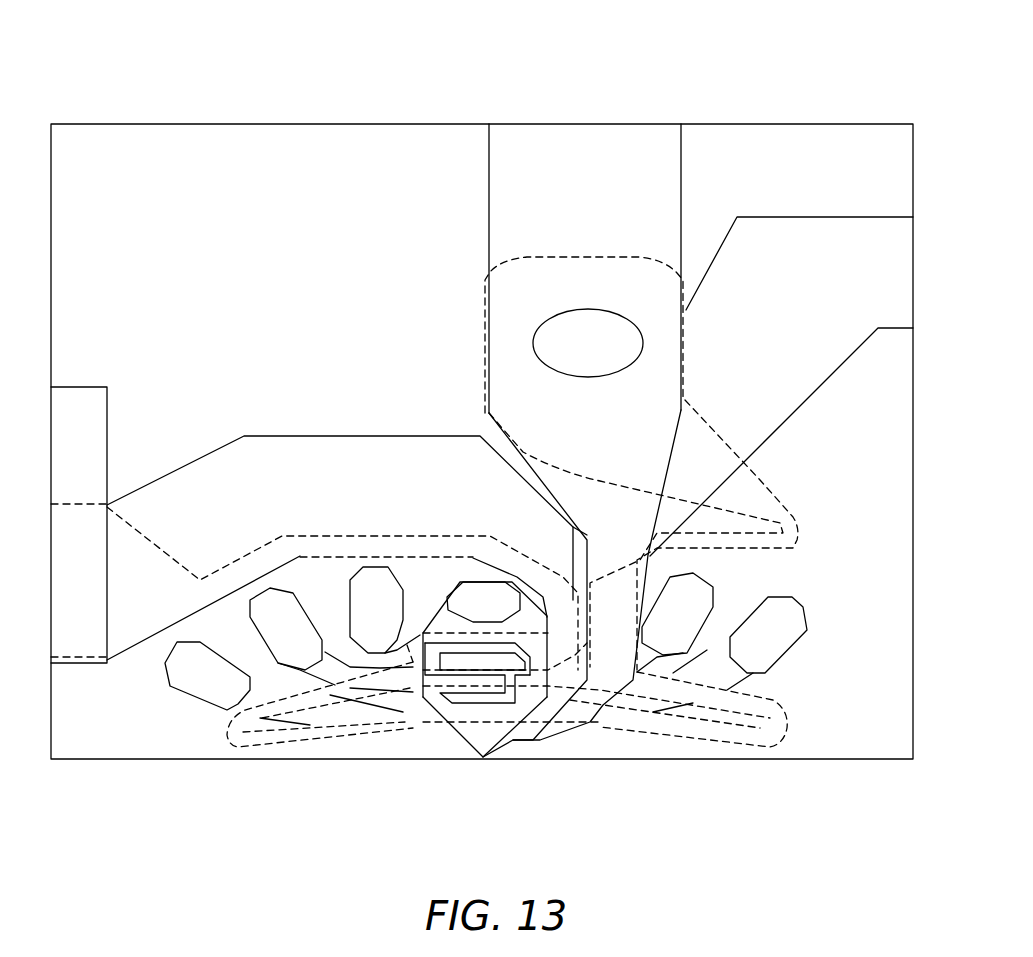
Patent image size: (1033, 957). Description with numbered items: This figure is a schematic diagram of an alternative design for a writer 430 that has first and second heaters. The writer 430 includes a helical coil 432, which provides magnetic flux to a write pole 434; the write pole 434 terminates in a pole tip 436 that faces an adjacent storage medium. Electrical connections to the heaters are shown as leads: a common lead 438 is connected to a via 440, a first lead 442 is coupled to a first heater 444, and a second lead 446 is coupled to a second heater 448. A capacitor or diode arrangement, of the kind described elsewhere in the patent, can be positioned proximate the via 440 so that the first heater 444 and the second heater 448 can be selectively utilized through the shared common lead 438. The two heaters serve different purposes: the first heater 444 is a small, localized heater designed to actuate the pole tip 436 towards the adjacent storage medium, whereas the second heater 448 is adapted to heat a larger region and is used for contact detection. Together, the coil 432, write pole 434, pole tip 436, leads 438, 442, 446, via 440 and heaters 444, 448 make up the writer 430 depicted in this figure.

The writer 430 is at (247, 103).
The helical coil 432 is at (807, 607).
The write pole 434 is at (460, 740).
The pole tip 436 is at (483, 757).
The common lead 438 is at (607, 123).
The via 440 is at (596, 315).
The first lead 442 is at (540, 488).
The first heater 444 is at (413, 723).
The second lead 446 is at (712, 552).
The second heater 448 is at (672, 737).